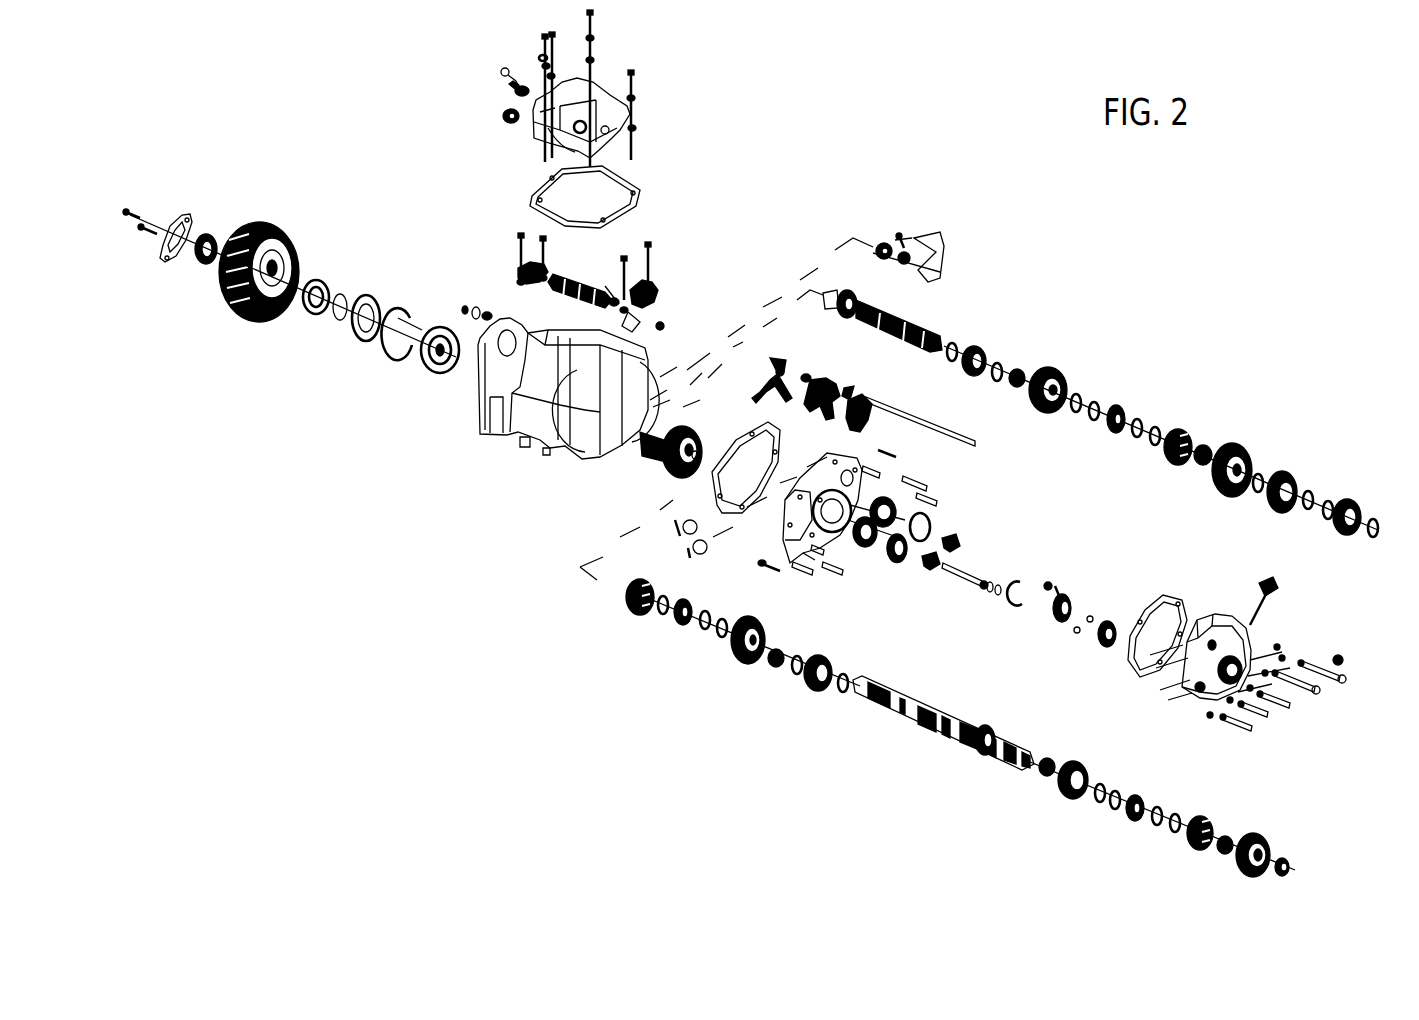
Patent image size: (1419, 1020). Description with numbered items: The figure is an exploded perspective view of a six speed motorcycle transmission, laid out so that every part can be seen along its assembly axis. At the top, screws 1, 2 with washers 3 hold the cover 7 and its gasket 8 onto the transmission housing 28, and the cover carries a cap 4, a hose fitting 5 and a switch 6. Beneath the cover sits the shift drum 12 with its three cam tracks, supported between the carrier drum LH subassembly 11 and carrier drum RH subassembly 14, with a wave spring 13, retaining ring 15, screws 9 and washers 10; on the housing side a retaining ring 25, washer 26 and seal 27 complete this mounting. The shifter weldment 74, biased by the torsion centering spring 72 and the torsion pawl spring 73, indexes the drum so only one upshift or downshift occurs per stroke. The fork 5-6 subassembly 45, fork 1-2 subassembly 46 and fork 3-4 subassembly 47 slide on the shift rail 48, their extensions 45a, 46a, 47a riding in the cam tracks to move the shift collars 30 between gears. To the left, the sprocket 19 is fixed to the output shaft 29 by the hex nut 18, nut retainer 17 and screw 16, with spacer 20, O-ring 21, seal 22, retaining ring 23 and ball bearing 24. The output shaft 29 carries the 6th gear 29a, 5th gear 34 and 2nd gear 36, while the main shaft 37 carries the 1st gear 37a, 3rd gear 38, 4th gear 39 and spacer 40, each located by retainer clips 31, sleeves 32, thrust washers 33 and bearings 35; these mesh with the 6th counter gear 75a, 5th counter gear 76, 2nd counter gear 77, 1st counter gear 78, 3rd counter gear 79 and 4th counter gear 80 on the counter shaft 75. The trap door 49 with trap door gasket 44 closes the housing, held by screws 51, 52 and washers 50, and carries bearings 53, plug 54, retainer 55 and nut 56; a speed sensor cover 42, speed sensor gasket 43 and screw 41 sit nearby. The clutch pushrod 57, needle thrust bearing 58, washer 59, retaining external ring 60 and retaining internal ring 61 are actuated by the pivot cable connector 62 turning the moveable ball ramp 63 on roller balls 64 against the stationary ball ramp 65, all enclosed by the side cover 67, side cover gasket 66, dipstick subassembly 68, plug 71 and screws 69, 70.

The screw 1 is at (540, 46).
The screw 2 is at (538, 58).
The washer 3 is at (540, 66).
The cap 4 is at (500, 73).
The hose fitting 5 is at (512, 91).
The switch 6 is at (502, 117).
The cover 7 is at (636, 128).
The gasket 8 is at (636, 188).
The screw 9 is at (541, 236).
The washer 10 is at (541, 243).
The carrier drum LH subassembly 11 is at (516, 270).
The shift drum 12 is at (572, 280).
The wave spring 13 is at (613, 298).
The carrier drum RH subassembly 14 is at (652, 298).
The retaining ring 15 is at (666, 325).
The screw 16 is at (148, 230).
The nut retainer 17 is at (166, 258).
The hex nut 18 is at (200, 264).
The sprocket 19 is at (248, 312).
The spacer 20 is at (310, 312).
The O-ring 21 is at (338, 320).
The seal 22 is at (360, 342).
The retaining ring 23 is at (400, 366).
The ball bearing 24 is at (434, 374).
The retaining ring 25 is at (462, 304).
The washer 26 is at (474, 306).
The seal 27 is at (486, 310).
The transmission housing 28 is at (518, 438).
The output shaft 29 is at (642, 460).
The 6th gear 29a is at (670, 478).
The shift collar 30 is at (1192, 436).
The retainer clip 31 is at (956, 342).
The sleeve 32 is at (1122, 406).
The thrust washer 33 is at (1094, 402).
The 5th gear 34 is at (740, 662).
The bearing 35 is at (1020, 370).
The 2nd gear 36 is at (812, 690).
The main shaft 37 is at (896, 716).
The 1st gear 37a is at (980, 756).
The 3rd gear 38 is at (1066, 798).
The 4th gear 39 is at (1266, 842).
The spacer 40 is at (1290, 862).
The screw 41 is at (674, 524).
The speed sensor cover 42 is at (682, 530).
The speed sensor gasket 43 is at (692, 550).
The trap door gasket 44 is at (728, 460).
The fork 5-6 subassembly 45 is at (790, 364).
The extension 45a is at (782, 366).
The fork 1-2 subassembly 46 is at (834, 382).
The extension 46a is at (812, 374).
The fork 3-4 subassembly 47 is at (864, 402).
The extension 47a is at (856, 388).
The shift rail 48 is at (906, 414).
The trap door 49 is at (872, 455).
The washer 50 is at (930, 488).
The screw 51 is at (940, 500).
The screw 52 is at (880, 486).
The bearing 53 is at (898, 510).
The plug 54 is at (893, 562).
The retainer 55 is at (934, 524).
The nut 56 is at (964, 542).
The clutch pushrod 57 is at (964, 580).
The needle thrust bearing 58 is at (990, 596).
The washer 59 is at (998, 600).
The retaining external ring 60 is at (1008, 604).
The retaining internal ring 61 is at (1045, 573).
The pivot cable connector 62 is at (1060, 592).
The moveable ball ramp 63 is at (1070, 598).
The roller ball 64 is at (1092, 614).
The stationary ball ramp 65 is at (1102, 648).
The side cover gasket 66 is at (1176, 602).
The side cover 67 is at (1182, 696).
The dipstick subassembly 68 is at (1270, 606).
The screw 69 is at (1240, 730).
The screw 70 is at (1348, 677).
The plug 71 is at (1342, 656).
The torsion centering spring 72 is at (878, 244).
The torsion pawl spring 73 is at (898, 232).
The shifter weldment 74 is at (935, 232).
The counter shaft 75 is at (912, 330).
The 6th counter gear 75a is at (848, 294).
The 5th counter gear 76 is at (982, 348).
The 2nd counter gear 77 is at (1058, 374).
The 1st counter gear 78 is at (1248, 450).
The 3rd counter gear 79 is at (1296, 476).
The 4th counter gear 80 is at (1358, 502).